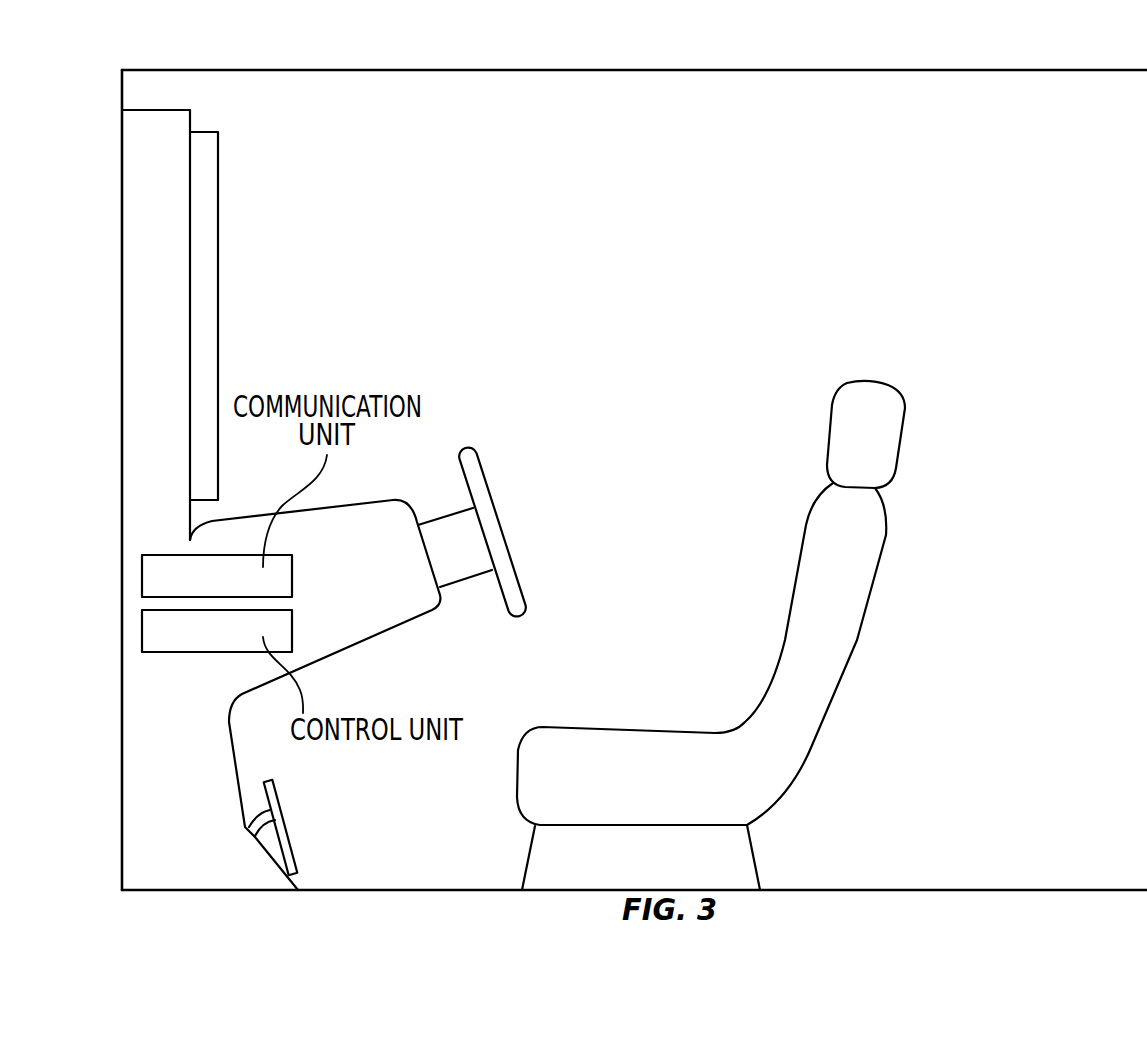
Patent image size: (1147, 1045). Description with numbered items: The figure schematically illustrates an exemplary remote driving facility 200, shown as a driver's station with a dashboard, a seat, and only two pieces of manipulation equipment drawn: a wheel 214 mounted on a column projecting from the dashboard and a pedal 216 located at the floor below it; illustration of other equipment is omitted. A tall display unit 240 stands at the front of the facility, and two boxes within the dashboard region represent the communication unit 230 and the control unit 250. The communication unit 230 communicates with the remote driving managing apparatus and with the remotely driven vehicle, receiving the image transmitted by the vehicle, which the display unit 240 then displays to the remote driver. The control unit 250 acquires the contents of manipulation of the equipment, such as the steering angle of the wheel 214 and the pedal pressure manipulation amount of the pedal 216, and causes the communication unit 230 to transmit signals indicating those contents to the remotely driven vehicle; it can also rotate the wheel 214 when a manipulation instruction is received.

The remote driving facility 200 is at (172, 47).
The display unit 240 is at (222, 167).
The wheel 214 is at (482, 456).
The communication unit 230 is at (296, 580).
The control unit 250 is at (296, 636).
The pedal 216 is at (277, 791).